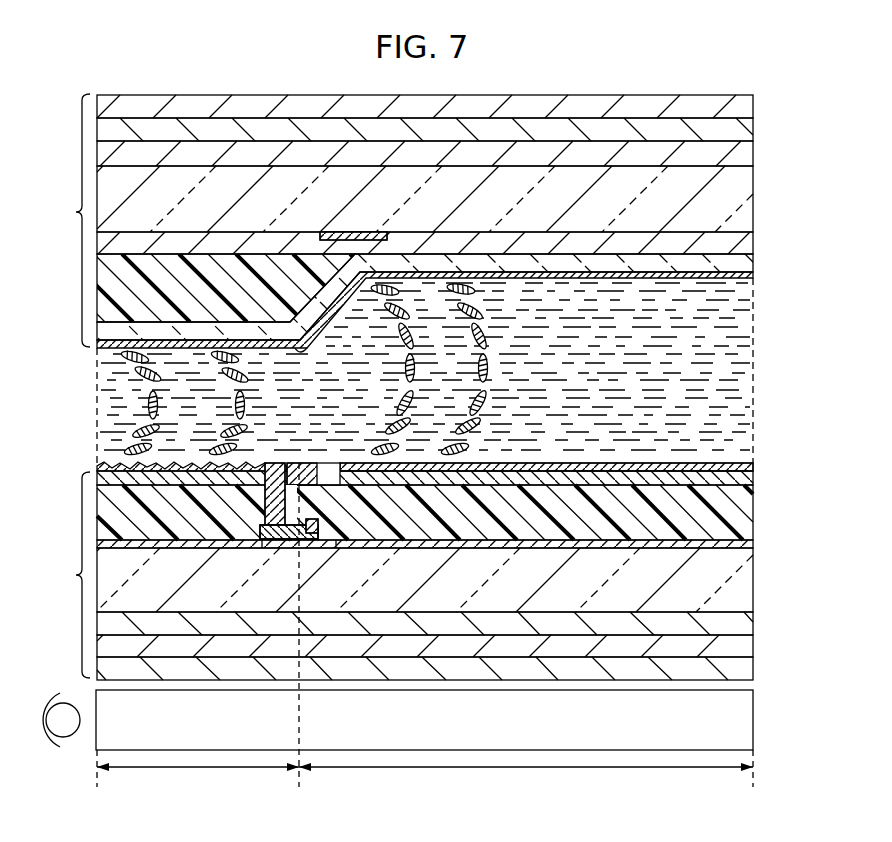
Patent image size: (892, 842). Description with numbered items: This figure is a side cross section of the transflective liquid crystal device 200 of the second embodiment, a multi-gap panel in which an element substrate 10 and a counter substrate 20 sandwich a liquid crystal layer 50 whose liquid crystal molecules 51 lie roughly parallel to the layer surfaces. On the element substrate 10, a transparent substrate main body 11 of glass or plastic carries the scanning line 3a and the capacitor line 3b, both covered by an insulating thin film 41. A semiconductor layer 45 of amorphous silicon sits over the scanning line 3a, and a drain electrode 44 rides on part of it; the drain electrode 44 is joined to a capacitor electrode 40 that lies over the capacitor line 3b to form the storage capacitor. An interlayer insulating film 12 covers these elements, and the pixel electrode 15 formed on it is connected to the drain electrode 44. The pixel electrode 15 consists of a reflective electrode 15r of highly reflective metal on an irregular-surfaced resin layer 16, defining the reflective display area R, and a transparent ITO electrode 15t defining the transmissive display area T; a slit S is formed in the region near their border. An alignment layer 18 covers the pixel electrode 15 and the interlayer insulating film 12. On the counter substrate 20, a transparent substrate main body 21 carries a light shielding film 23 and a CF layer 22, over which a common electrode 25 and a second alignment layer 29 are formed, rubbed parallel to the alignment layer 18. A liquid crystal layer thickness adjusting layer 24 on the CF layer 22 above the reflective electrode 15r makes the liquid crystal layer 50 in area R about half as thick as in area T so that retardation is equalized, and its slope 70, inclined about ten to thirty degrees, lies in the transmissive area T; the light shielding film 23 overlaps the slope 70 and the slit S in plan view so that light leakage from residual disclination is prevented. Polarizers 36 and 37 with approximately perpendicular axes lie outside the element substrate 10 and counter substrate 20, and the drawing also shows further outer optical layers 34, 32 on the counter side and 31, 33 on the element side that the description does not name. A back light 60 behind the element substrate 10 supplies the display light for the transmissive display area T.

The liquid crystal device 200 is at (690, 73).
The counter substrate 20 is at (67, 220).
The element substrate 10 is at (67, 575).
The polarizer 37 is at (745, 107).
The polarizing plate 34 is at (745, 130).
The retardation plate 32 is at (745, 153).
The transparent substrate main body 21 is at (740, 198).
The CF layer 22 is at (745, 248).
The light shielding film 23 is at (338, 232).
The liquid crystal layer thickness adjusting layer 24 is at (178, 312).
The common electrode 25 is at (740, 262).
The alignment layer 29 is at (735, 277).
The slope 70 is at (330, 320).
The liquid crystal layer 50 is at (735, 360).
The liquid crystal molecules 51 is at (480, 322).
The pixel electrode 15 is at (584, 456).
The transparent electrode 15t is at (700, 465).
The reflective electrode 15r is at (273, 463).
The resin layer 16 is at (107, 462).
The alignment layer 18 is at (745, 478).
The slit S is at (333, 463).
The interlayer insulating film 12 is at (740, 517).
The drain electrode 44 is at (262, 532).
The capacitor electrode 40 is at (262, 532).
The semiconductor layer 45 is at (320, 528).
The insulating thin film 41 is at (745, 546).
The capacitor line 3b is at (262, 548).
The scanning line 3a is at (336, 548).
The transparent substrate main body 11 is at (740, 584).
The lower retardation plate 31 is at (740, 627).
The lower polarizing plate 33 is at (745, 645).
The polarizer 36 is at (745, 668).
The back light 60 is at (740, 722).
The reflective display area R is at (198, 630).
The transmissive display area T is at (526, 774).